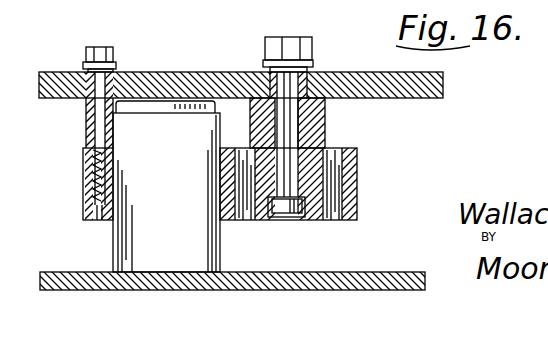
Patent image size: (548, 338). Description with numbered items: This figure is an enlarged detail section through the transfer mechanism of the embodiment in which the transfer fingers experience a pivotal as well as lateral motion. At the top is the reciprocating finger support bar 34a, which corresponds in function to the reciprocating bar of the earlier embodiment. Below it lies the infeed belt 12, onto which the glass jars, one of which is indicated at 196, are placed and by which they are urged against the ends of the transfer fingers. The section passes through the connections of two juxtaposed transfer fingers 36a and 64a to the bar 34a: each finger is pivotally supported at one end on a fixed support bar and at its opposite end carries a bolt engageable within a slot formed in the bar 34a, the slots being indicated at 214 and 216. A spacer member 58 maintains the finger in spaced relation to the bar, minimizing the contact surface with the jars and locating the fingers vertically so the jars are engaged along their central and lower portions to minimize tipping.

The infeed belt 12 is at (357, 272).
The reciprocating finger support bar 34a is at (443, 80).
The transfer finger 36a is at (357, 150).
The spacer member 58 is at (325, 120).
The transfer finger 64a is at (83, 181).
The glass jar 196 is at (200, 243).
The slot 214 is at (100, 46).
The slot 216 is at (288, 37).